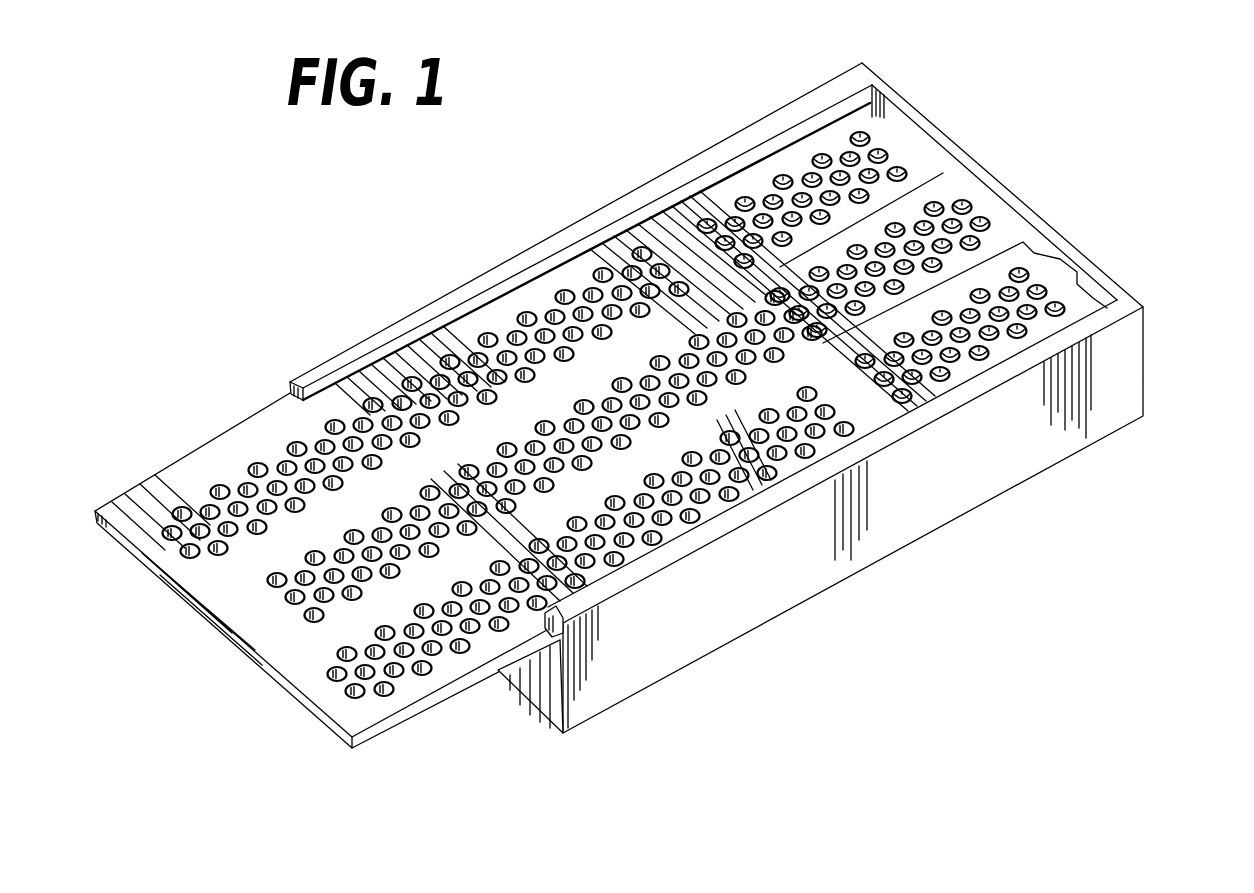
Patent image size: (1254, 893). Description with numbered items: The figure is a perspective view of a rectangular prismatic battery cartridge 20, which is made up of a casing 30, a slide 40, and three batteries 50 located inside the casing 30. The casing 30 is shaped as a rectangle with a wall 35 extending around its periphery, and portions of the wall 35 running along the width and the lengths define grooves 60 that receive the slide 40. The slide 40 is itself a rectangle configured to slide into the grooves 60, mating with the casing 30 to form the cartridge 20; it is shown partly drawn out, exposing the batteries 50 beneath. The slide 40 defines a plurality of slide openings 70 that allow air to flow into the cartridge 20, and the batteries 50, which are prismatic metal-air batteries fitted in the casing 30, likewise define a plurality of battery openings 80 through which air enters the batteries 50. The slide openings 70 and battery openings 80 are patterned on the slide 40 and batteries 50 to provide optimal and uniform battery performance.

The battery cartridge 20 is at (355, 264).
The casing 30 is at (1145, 367).
The wall 35 is at (703, 607).
The slide 40 is at (367, 718).
The batteries 50 is at (1033, 255).
The grooves 60 is at (757, 163).
The slide openings 70 is at (256, 467).
The battery openings 80 is at (878, 156).